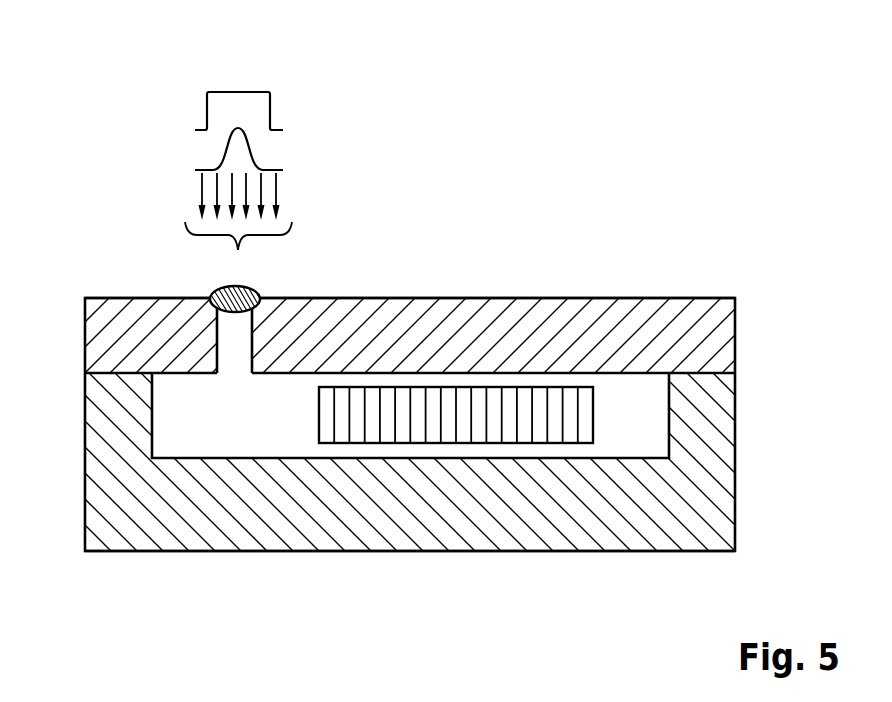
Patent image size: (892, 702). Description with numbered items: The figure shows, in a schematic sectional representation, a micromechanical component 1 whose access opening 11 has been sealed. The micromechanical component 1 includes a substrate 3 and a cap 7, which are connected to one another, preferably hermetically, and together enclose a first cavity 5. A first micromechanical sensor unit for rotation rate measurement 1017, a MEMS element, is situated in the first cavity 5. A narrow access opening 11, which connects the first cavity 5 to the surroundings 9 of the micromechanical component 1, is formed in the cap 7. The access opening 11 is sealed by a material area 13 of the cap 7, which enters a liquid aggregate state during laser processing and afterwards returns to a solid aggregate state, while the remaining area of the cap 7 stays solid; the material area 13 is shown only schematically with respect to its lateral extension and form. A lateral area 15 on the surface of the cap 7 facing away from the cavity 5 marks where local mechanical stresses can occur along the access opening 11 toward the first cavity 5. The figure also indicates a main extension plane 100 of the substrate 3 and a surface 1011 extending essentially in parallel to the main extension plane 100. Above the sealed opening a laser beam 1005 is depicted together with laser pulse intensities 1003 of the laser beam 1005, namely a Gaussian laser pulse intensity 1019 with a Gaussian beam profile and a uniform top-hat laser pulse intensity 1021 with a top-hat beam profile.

The micromechanical component 1 is at (445, 414).
The substrate 3 is at (713, 470).
The first cavity 5 is at (177, 427).
The cap 7 is at (440, 310).
The surroundings 9 is at (150, 242).
The access opening 11 is at (244, 384).
The material area 13 is at (212, 292).
The lateral area 15 is at (318, 149).
The main extension plane 100 is at (628, 552).
The laser pulse intensities 1003 is at (323, 137).
The laser beam 1005 is at (238, 250).
The surface 1011 is at (602, 285).
The first micromechanical sensor unit for rotation rate measurement 1017 is at (515, 410).
The Gaussian laser pulse intensity 1019 is at (255, 163).
The top-hat laser pulse intensity 1021 is at (272, 112).